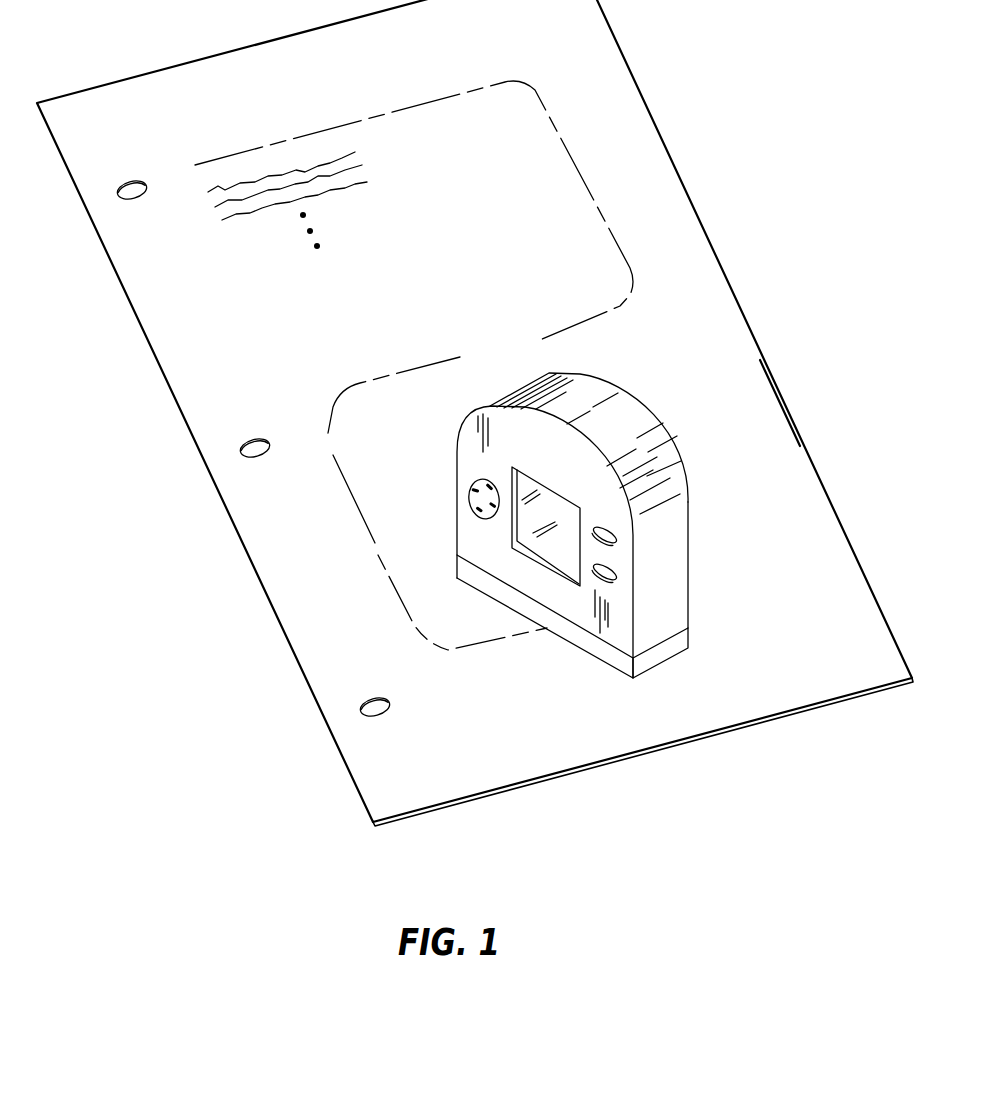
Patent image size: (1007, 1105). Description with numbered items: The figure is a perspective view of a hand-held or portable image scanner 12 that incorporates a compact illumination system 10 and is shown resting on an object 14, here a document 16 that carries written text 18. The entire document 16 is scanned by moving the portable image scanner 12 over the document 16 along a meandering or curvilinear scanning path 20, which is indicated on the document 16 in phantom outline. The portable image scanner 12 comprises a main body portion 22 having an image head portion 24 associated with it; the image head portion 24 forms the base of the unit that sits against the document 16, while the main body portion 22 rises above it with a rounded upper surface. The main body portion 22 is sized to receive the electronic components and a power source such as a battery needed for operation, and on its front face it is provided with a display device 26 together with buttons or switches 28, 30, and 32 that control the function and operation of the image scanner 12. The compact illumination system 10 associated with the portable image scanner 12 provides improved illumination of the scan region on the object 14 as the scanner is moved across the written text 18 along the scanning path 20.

The compact illumination system 10 is at (578, 537).
The portable image scanner 12 is at (640, 405).
The object 14 is at (717, 253).
The document 16 is at (782, 390).
The written text 18 is at (363, 183).
The scanning path 20 is at (375, 543).
The main body portion 22 is at (690, 497).
The image head portion 24 is at (690, 638).
The display device 26 is at (512, 545).
The button or switch 28 is at (468, 488).
The button or switch 30 is at (617, 537).
The button or switch 32 is at (617, 573).